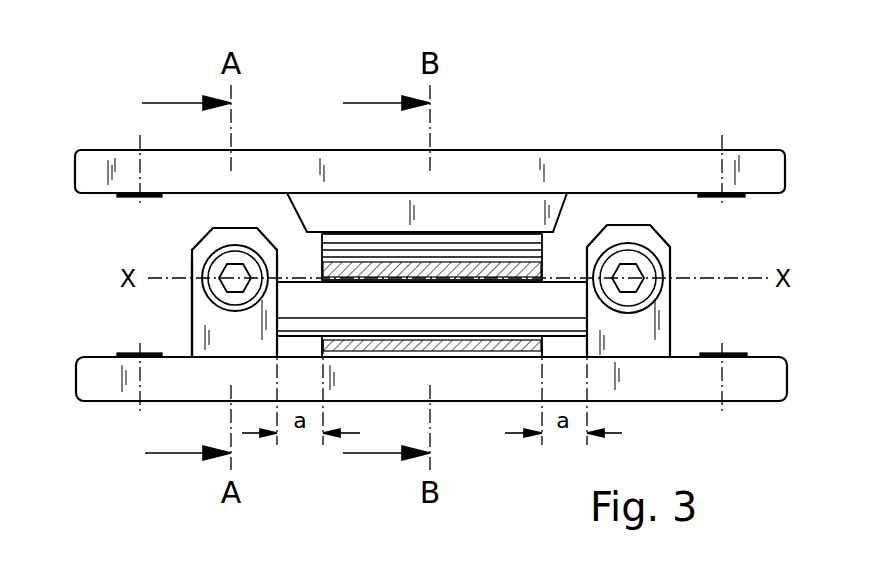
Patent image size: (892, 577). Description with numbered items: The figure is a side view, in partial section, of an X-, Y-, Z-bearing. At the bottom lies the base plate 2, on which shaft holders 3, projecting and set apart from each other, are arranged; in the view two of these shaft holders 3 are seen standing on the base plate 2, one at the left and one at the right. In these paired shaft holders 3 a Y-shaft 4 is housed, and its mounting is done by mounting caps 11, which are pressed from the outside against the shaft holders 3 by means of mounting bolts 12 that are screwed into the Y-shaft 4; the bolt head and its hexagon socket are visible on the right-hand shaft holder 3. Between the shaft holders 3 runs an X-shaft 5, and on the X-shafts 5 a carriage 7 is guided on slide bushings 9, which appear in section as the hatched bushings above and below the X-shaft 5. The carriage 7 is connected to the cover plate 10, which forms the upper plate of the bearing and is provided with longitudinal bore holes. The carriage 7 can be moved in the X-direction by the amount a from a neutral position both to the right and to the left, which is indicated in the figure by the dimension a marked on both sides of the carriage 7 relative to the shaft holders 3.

The base plate 2 is at (763, 380).
The shaft holder 3 is at (203, 320).
The Y-shaft 4 is at (180, 272).
The X-shaft 5 is at (473, 320).
The carriage 7 is at (386, 347).
The slide bushing 9 is at (350, 277).
The cover plate 10 is at (736, 155).
The mounting cap 11 is at (662, 283).
The mounting bolt 12 is at (632, 283).